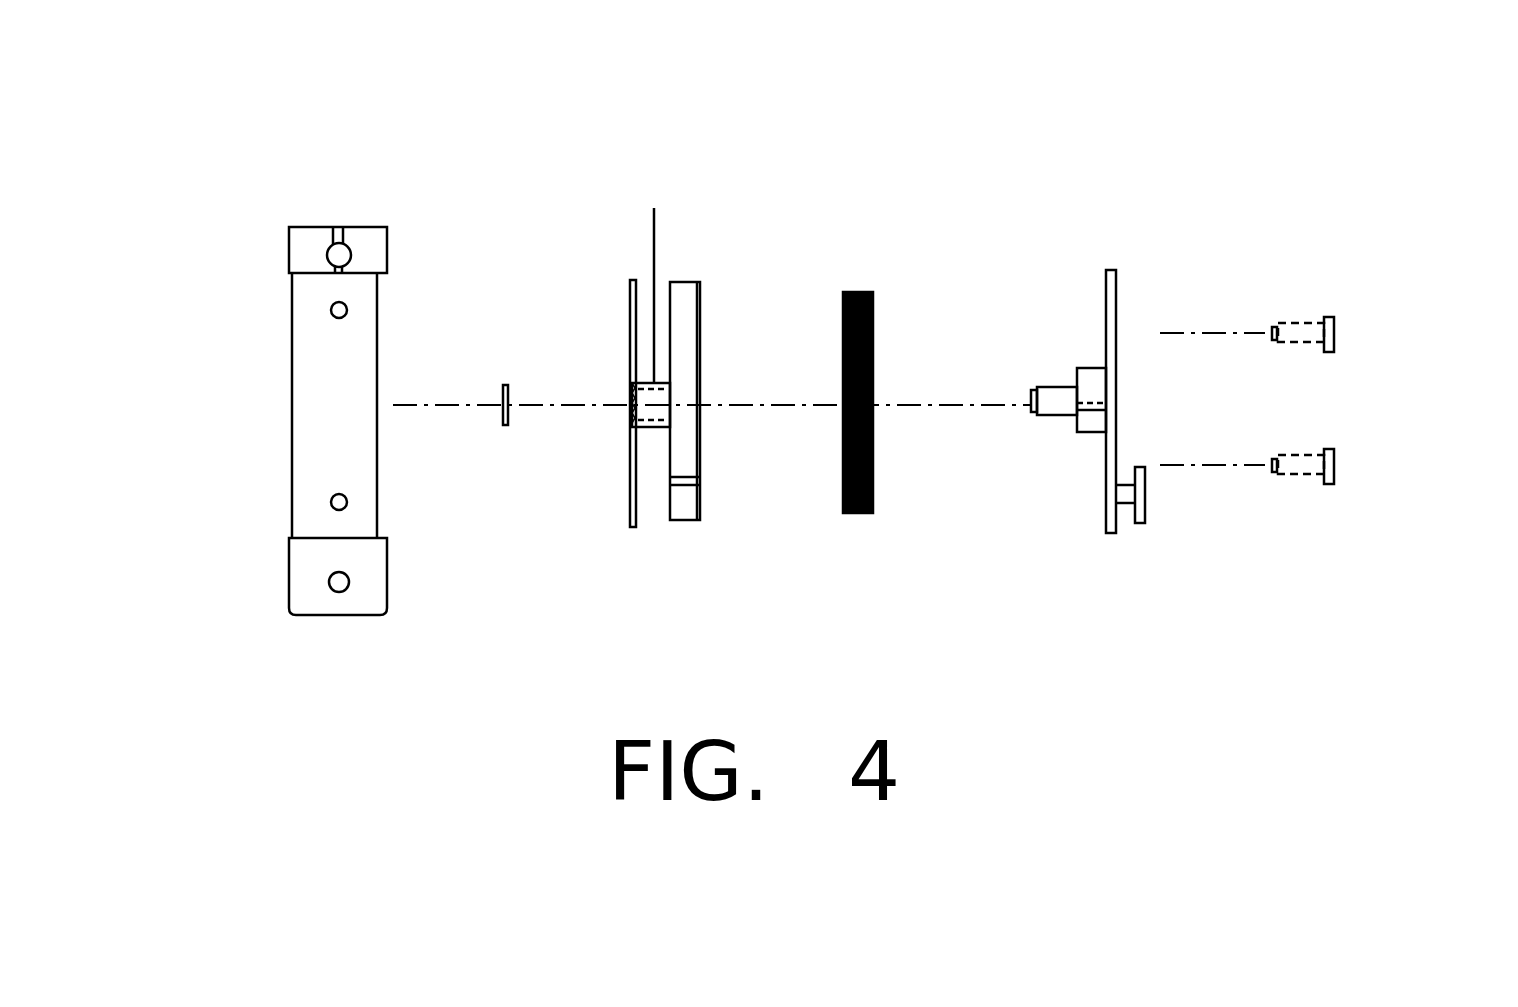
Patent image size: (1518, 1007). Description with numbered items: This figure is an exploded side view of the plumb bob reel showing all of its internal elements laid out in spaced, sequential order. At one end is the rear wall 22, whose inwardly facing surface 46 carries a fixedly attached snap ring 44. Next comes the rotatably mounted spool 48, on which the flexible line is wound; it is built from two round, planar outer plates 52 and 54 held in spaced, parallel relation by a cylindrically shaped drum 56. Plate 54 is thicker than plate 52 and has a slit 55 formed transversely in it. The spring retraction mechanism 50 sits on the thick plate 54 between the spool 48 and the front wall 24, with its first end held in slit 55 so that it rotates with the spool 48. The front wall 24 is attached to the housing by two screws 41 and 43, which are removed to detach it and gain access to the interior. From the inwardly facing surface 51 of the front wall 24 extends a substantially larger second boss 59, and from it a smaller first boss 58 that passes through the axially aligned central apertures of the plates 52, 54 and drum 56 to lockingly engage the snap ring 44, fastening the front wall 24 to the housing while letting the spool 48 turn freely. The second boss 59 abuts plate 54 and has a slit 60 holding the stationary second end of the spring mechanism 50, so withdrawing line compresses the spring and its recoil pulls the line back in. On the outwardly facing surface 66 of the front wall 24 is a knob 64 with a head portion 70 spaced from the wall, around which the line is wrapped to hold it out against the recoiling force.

The rear wall 22 is at (289, 462).
The front wall 24 is at (1115, 297).
The screw 41 is at (1335, 325).
The screw 43 is at (1335, 463).
The snap ring 44 is at (506, 385).
The inwardly facing surface of rear wall 46 is at (292, 393).
The spool 48 is at (655, 513).
The spring retraction mechanism 50 is at (863, 292).
The inwardly facing surface of front wall 51 is at (1107, 288).
The outer plate 52 is at (632, 280).
The outer plate 54 is at (688, 287).
The slit 55 is at (700, 483).
The drum 56 is at (654, 208).
The first boss 58 is at (1048, 410).
The second boss 59 is at (1025, 291).
The slit 60 is at (1088, 412).
The knob 64 is at (1126, 505).
The outwardly facing surface of front wall 66 is at (1116, 396).
The head portion 70 is at (1146, 503).